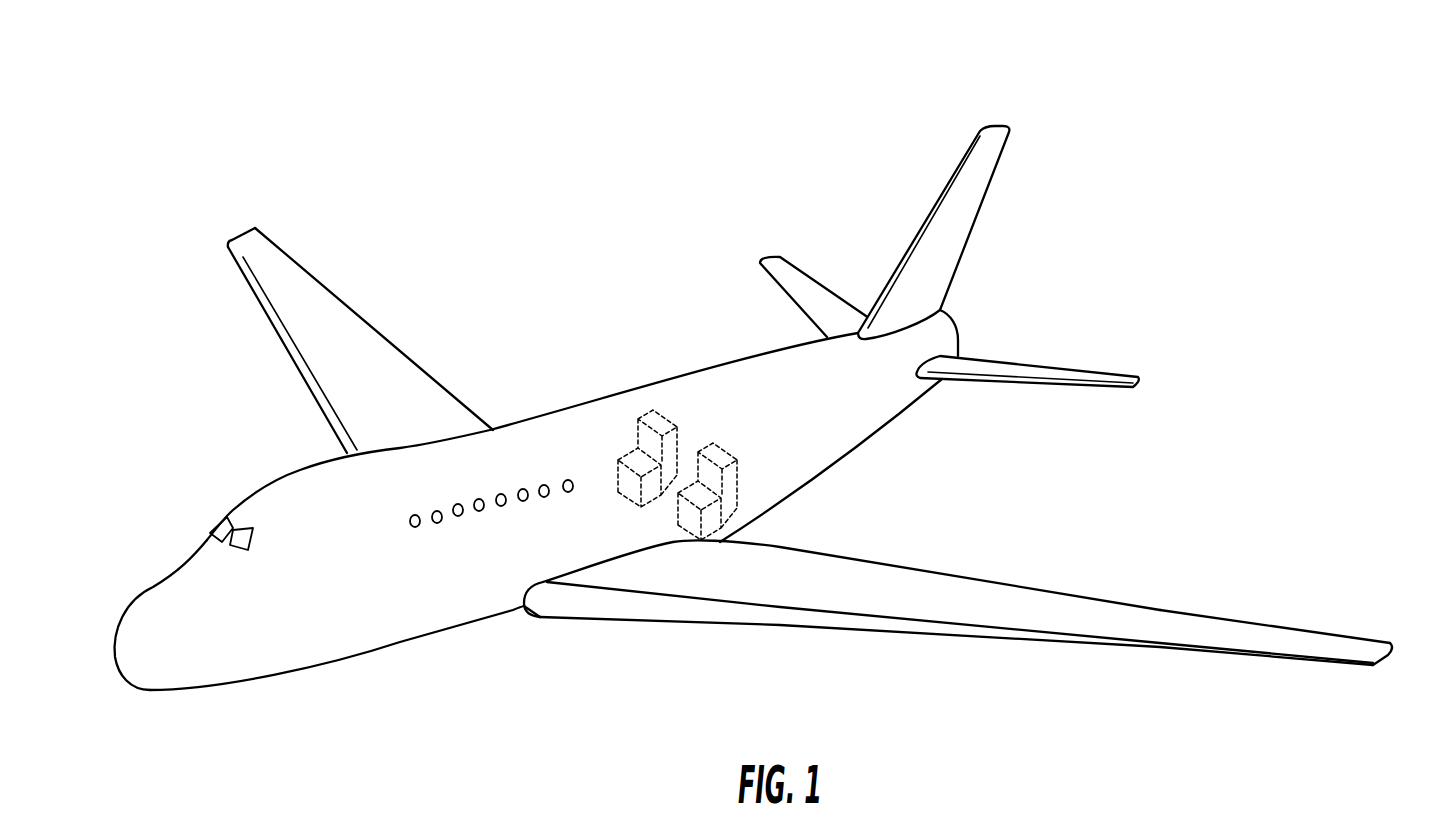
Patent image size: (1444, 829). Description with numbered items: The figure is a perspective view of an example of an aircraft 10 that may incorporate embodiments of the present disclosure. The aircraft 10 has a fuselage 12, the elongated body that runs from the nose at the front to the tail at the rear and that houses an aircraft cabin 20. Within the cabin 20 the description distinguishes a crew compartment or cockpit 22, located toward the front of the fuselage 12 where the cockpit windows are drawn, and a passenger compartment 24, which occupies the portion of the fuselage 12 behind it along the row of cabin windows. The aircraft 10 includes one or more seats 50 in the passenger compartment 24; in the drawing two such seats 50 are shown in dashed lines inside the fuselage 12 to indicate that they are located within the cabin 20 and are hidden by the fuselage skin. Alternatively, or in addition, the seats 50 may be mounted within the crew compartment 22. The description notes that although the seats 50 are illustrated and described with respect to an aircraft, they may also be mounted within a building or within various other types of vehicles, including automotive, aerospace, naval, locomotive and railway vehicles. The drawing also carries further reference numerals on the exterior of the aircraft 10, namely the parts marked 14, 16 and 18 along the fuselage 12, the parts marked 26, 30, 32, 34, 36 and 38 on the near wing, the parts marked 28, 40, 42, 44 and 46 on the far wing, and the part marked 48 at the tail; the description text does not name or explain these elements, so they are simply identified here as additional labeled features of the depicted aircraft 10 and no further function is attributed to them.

The aircraft 10 is at (138, 572).
The fuselage 12 is at (260, 675).
The nose 14 is at (137, 667).
The tail section 16 is at (868, 422).
The aft fuselage portion 18 is at (750, 507).
The aircraft cabin 20 is at (566, 556).
The crew compartment 22 is at (222, 515).
The passenger compartment 24 is at (620, 402).
The first wing 26 is at (966, 652).
The second wing 28 is at (266, 228).
The wing root 30 is at (667, 543).
The wing tip 32 is at (1387, 653).
The leading edge 34 is at (882, 577).
The trailing edge 36 is at (723, 610).
The upper wing surface 38 is at (1095, 593).
The wing tip 40 is at (240, 233).
The upper wing surface 42 is at (285, 280).
The trailing edge 44 is at (257, 298).
The leading edge 46 is at (333, 285).
The horizontal stabilizer 48 is at (1030, 352).
The seats 50 is at (662, 427).